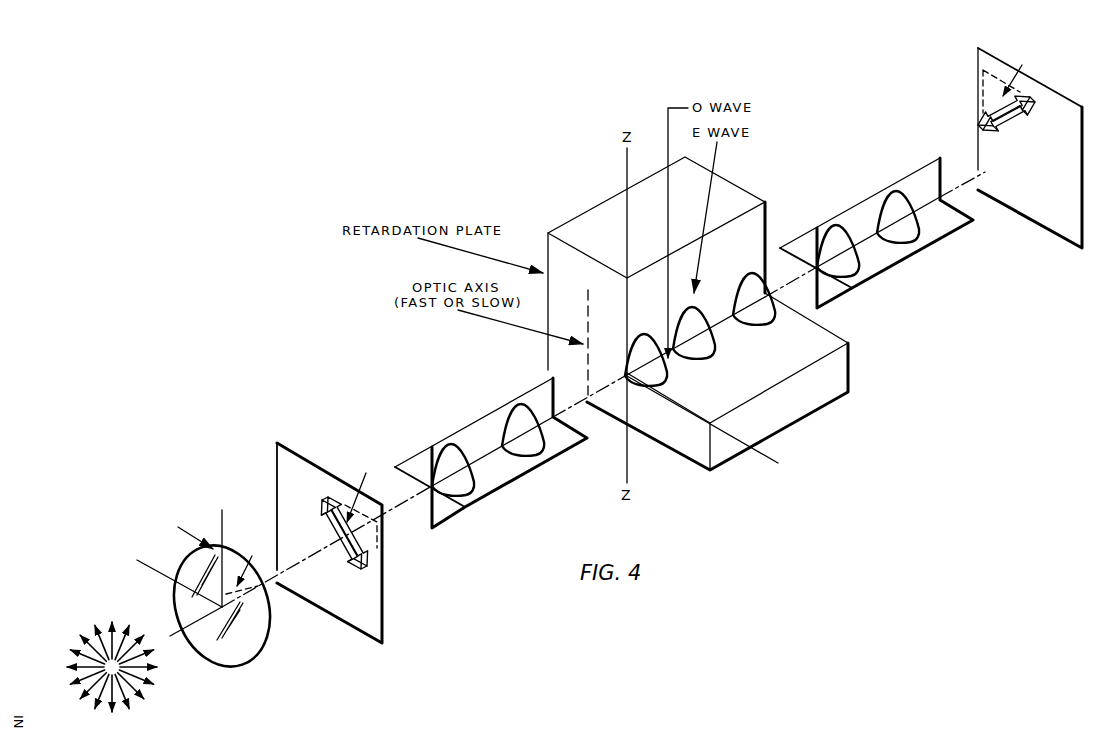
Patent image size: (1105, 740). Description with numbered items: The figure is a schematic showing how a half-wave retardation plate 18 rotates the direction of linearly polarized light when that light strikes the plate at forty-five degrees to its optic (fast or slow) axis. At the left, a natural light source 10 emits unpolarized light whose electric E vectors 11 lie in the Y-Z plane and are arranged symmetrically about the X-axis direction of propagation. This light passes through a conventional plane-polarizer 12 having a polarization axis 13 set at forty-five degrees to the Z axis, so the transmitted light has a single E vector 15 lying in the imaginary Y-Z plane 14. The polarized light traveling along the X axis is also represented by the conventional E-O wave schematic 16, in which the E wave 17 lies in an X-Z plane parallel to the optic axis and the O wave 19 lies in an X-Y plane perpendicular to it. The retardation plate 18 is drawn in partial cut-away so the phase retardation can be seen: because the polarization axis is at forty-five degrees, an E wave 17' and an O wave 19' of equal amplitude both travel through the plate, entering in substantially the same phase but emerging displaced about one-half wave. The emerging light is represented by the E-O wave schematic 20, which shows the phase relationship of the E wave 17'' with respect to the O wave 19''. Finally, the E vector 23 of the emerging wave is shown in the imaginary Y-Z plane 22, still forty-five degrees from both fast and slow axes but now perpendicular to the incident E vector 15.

The natural light source 10 is at (160, 696).
The electric E vectors 11 is at (98, 631).
The plane-polarizer 12 is at (276, 640).
The polarization axis 13 is at (243, 603).
The imaginary Y-Z plane 14 is at (392, 607).
The E vector 15 is at (372, 537).
The E-O wave schematic 16 is at (500, 504).
The E wave 17 is at (488, 430).
The half-wave retardation plate 18 is at (795, 433).
The O wave 19 is at (506, 451).
The E-O wave schematic 20 is at (940, 248).
The imaginary Y-Z plane 22 is at (973, 157).
The E vector 23 is at (988, 112).
The E wave 17' is at (711, 324).
The O wave 19' is at (719, 335).
The E wave 17'' is at (868, 219).
The O wave 19'' is at (901, 232).